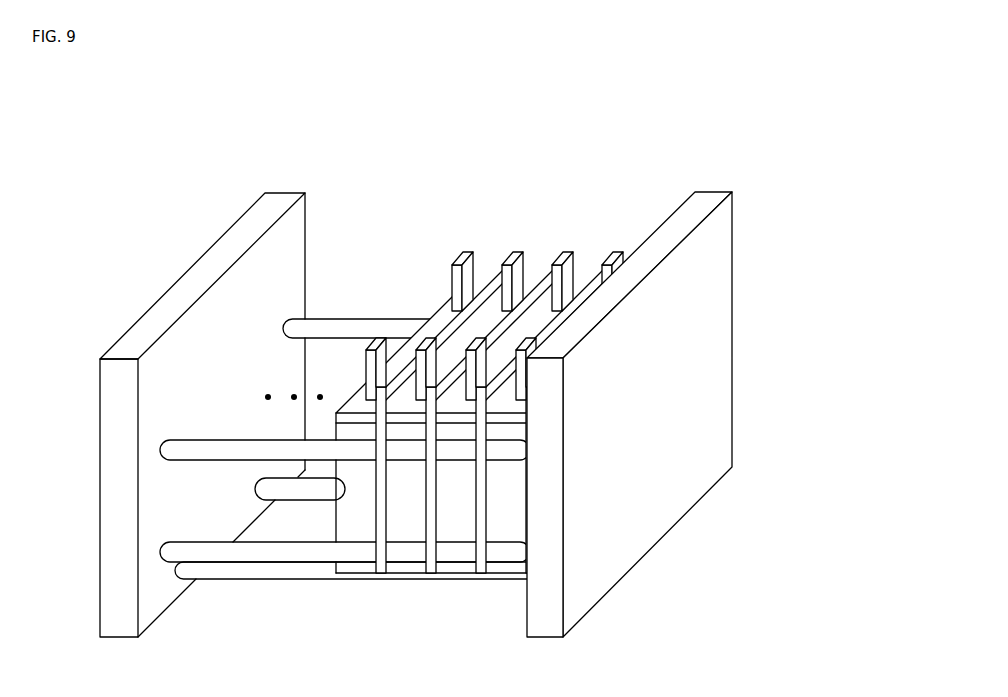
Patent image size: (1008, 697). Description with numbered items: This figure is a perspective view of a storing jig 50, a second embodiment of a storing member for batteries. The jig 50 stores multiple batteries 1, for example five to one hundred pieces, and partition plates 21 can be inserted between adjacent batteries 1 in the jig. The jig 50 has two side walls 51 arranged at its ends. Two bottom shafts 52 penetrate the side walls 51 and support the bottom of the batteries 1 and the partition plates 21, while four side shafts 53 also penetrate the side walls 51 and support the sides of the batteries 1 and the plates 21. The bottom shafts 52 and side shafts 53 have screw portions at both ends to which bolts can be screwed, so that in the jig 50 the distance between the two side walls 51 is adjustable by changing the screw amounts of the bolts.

The storing jig 50 is at (412, 361).
The side wall 51 is at (172, 300).
The bottom shaft 52 is at (262, 487).
The side shaft 53 is at (342, 326).
The battery 1 is at (442, 306).
The partition plate 21 is at (485, 270).